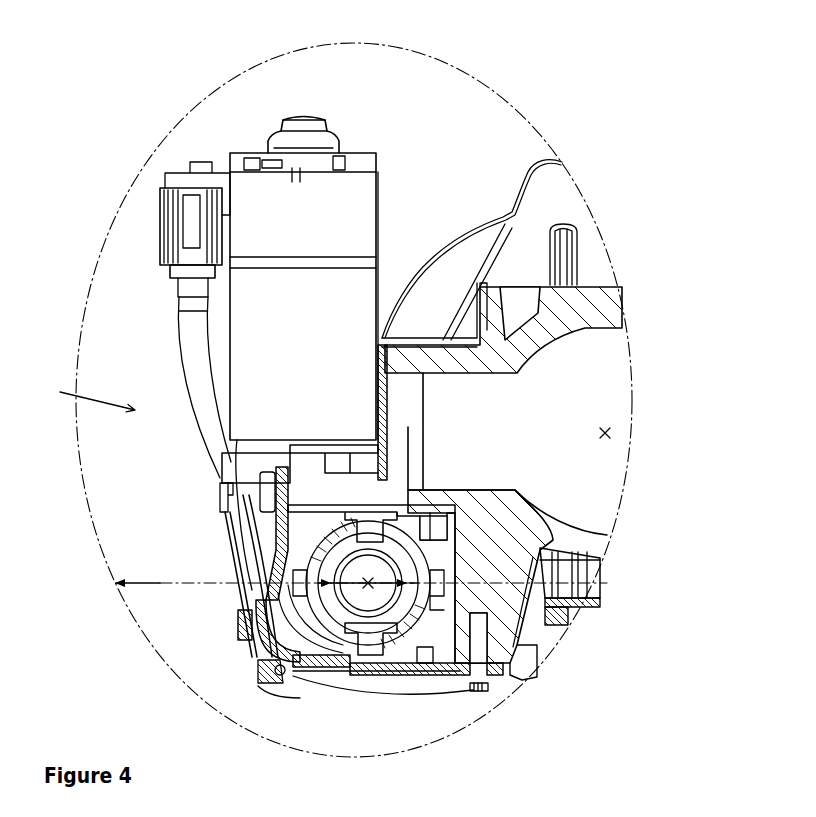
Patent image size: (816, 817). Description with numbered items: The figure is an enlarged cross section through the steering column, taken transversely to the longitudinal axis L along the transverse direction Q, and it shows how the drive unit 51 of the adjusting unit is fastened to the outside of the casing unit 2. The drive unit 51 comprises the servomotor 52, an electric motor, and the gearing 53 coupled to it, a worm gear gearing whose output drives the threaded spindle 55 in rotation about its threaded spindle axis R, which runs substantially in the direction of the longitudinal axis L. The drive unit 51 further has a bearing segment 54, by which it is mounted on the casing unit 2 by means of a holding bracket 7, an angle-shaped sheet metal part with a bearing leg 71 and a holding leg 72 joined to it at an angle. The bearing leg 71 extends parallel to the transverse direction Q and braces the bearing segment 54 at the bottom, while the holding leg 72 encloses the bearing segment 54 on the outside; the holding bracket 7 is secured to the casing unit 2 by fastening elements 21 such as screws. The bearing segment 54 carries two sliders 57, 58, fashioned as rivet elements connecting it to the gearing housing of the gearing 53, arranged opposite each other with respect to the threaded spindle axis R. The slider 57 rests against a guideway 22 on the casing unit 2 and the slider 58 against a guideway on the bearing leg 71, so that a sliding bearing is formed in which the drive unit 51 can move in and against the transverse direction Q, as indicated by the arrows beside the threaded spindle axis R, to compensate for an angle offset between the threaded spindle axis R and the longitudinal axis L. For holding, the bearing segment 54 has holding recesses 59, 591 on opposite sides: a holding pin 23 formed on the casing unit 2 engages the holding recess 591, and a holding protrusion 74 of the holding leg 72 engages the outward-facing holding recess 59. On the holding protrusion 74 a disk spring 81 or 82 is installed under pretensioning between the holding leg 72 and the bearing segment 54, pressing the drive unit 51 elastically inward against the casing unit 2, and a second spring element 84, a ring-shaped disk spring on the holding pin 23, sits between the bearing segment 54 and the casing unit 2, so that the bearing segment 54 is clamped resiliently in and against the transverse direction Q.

The casing unit 2 is at (605, 308).
The holding bracket 7 is at (260, 688).
The fastening elements 21 is at (262, 482).
The guideway 22 is at (268, 440).
The holding pin 23 is at (433, 578).
The drive unit 51 is at (82, 396).
The servomotor 52 is at (340, 222).
The gearing 53 is at (245, 472).
The bearing segment 54 is at (415, 675).
The threaded spindle 55 is at (401, 675).
The slider 57 is at (375, 520).
The slider 58 is at (382, 637).
The holding recess 59 is at (300, 545).
The holding recess 591 is at (435, 535).
The bearing leg 71 is at (443, 678).
The holding leg 72 is at (280, 524).
The holding protrusion 74 is at (243, 613).
The disk spring 81 is at (242, 627).
The disk spring 82 is at (189, 569).
The second spring element 84 is at (457, 567).
The transverse direction Q is at (118, 573).
The threaded spindle axis R is at (354, 617).
The longitudinal axis L is at (612, 432).